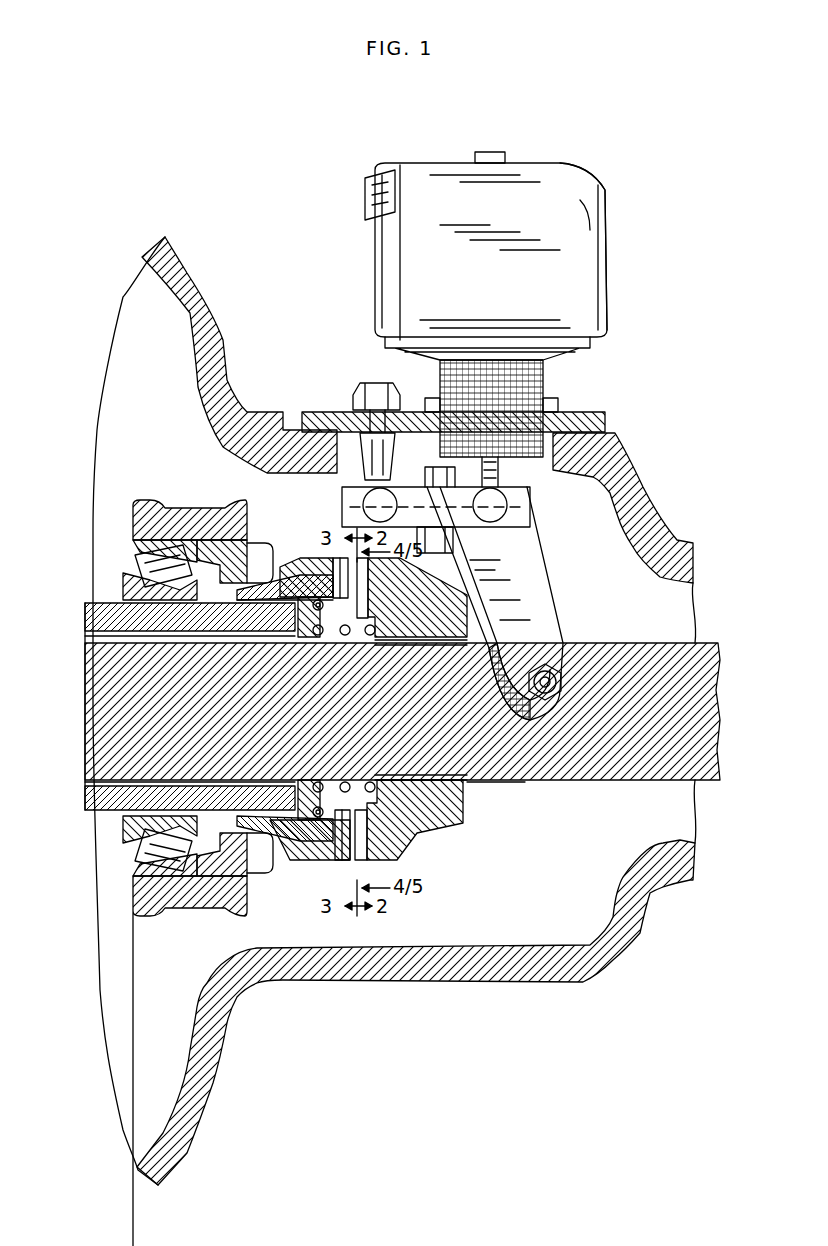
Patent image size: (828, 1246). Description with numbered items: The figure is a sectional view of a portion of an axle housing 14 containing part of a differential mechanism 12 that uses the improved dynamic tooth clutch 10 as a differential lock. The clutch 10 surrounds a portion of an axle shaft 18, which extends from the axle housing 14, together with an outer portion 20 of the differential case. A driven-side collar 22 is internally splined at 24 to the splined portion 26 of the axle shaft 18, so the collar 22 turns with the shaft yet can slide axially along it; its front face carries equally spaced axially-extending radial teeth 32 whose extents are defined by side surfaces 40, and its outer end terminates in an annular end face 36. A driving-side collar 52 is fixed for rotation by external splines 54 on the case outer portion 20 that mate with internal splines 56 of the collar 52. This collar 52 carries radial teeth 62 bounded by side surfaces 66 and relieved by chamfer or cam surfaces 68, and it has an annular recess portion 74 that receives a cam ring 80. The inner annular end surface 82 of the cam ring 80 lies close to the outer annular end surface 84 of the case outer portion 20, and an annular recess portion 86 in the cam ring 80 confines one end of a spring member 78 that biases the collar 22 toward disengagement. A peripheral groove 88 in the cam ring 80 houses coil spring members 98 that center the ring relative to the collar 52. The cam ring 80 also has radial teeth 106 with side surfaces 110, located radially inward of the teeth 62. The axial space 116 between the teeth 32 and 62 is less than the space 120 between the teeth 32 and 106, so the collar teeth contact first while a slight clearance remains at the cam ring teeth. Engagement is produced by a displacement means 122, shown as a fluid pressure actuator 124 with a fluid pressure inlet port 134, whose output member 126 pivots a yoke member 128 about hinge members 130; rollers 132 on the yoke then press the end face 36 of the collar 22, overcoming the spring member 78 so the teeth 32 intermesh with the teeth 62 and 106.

The dynamic tooth clutch 10 is at (452, 878).
The differential mechanism 12 is at (165, 478).
The axle housing 14 is at (258, 410).
The axle shaft 18 is at (718, 648).
The outer portion of the differential case 20 is at (90, 608).
The driven-side collar 22 is at (470, 816).
The internal splines 24 is at (428, 658).
The splined portion 26 is at (380, 660).
The radial teeth 32 is at (352, 858).
The annular end face 36 is at (470, 790).
The side surfaces 40 is at (366, 598).
The driving-side collar 52 is at (283, 856).
The external splines 54 is at (190, 636).
The internal splines 56 is at (215, 638).
The radial teeth 62 is at (300, 852).
The side surfaces 66 is at (292, 555).
The chamfer or cam surfaces 68 is at (306, 552).
The annular recess portion 74 is at (290, 800).
The spring member 78 is at (370, 783).
The cam ring 80 is at (318, 646).
The inner annular end surface 82 is at (298, 640).
The outer annular end surface 84 is at (268, 636).
The annular recess portion 86 is at (325, 795).
The peripheral groove 88 is at (312, 798).
The spring member 98 is at (330, 575).
The radial teeth 106 is at (345, 782).
The side surfaces 110 is at (350, 640).
The axial space 116 is at (405, 848).
The axial space 120 is at (395, 835).
The displacement means 122 is at (495, 239).
The fluid pressure actuator 124 is at (592, 272).
The output member 126 is at (525, 498).
The yoke member 128 is at (527, 566).
The hinge members 130 is at (398, 480).
The rollers 132 is at (563, 658).
The fluid pressure inlet port 134 is at (368, 184).